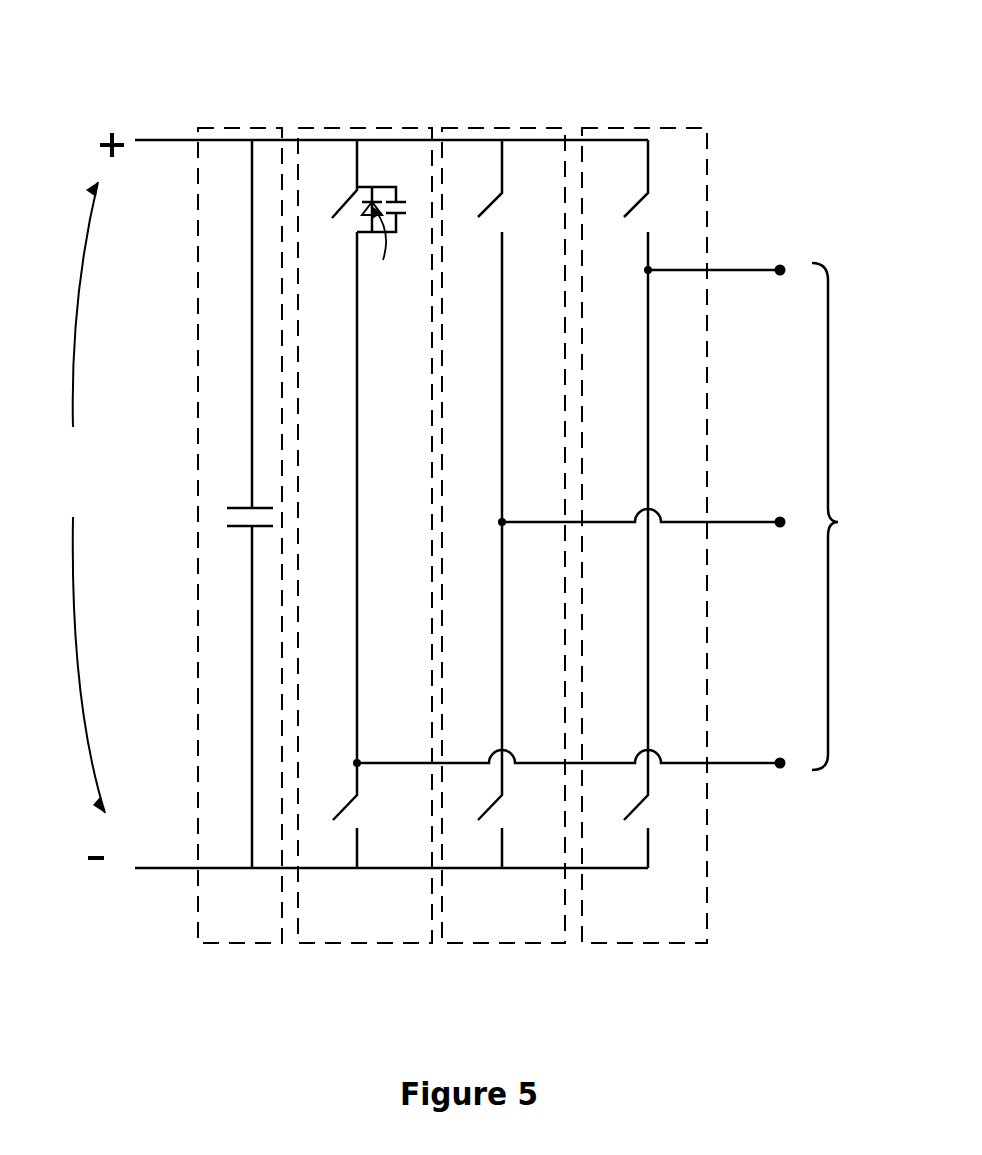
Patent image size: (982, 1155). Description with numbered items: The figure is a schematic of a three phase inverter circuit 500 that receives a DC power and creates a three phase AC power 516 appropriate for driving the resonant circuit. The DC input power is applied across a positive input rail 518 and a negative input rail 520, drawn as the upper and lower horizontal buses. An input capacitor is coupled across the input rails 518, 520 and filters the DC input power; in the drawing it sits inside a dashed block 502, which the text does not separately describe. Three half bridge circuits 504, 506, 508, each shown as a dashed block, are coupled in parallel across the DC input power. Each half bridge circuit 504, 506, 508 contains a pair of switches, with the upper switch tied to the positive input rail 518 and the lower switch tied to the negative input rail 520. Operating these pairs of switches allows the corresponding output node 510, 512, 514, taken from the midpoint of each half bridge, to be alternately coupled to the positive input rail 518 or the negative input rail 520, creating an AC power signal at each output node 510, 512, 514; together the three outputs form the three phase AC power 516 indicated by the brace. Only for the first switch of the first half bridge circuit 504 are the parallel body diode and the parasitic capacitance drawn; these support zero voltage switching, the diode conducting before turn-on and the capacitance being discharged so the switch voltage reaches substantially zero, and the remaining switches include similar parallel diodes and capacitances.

The three phase inverter circuit 500 is at (268, 1012).
The input capacitor stage 502 is at (250, 118).
The half bridge circuit 504 is at (357, 118).
The half bridge circuit 506 is at (495, 118).
The half bridge circuit 508 is at (632, 118).
The output node 510 is at (718, 257).
The output node 512 is at (645, 508).
The output node 514 is at (573, 750).
The three phase AC power 516 is at (850, 516).
The positive input rail 518 is at (162, 140).
The negative input rail 520 is at (175, 868).